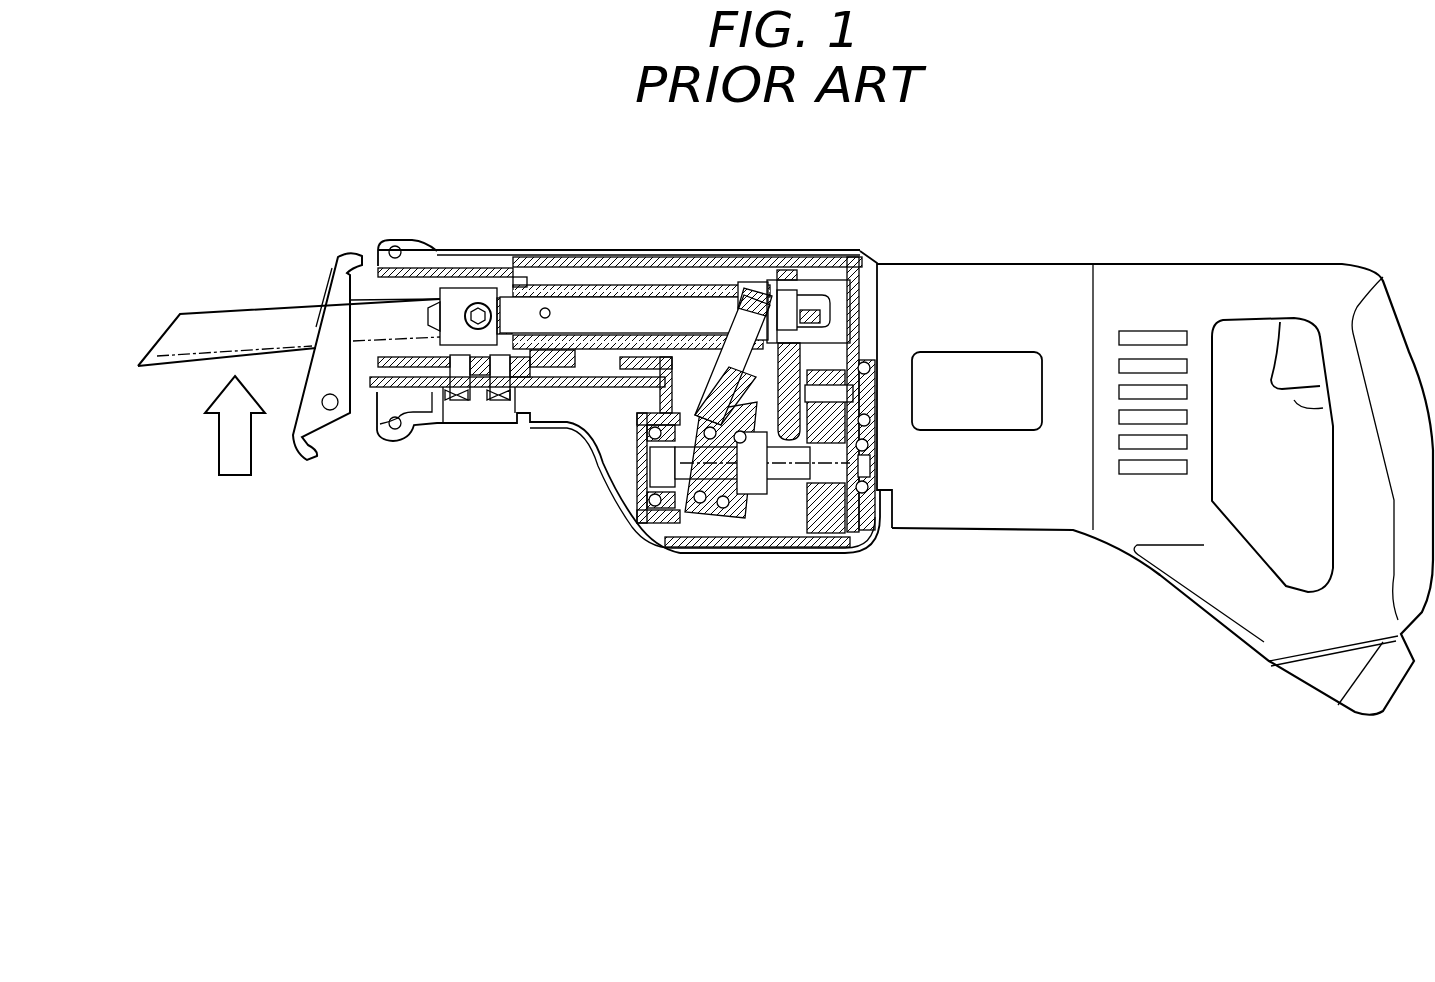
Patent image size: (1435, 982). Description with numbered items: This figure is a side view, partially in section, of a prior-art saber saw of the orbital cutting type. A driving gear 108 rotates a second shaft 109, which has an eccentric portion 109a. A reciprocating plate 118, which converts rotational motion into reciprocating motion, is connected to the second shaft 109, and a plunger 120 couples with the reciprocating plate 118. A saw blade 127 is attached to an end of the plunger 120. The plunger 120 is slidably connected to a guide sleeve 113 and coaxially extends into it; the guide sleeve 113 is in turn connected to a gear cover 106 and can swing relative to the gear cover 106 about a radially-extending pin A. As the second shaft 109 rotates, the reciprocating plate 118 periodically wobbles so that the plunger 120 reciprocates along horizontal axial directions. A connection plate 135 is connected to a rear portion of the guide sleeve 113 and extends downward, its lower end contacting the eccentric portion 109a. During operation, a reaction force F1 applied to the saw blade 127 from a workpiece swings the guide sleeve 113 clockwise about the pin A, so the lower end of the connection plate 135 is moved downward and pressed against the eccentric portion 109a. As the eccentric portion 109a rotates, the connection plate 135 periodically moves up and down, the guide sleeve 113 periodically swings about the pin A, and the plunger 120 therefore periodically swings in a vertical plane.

The saw blade 127 is at (199, 325).
The reaction force F1 is at (235, 443).
The radially-extending pin A is at (547, 290).
The plunger 120 is at (618, 312).
The gear cover 106 is at (655, 263).
The reciprocating plate 118 is at (745, 318).
The guide sleeve 113 is at (822, 275).
The driving gear 108 is at (872, 395).
The second shaft 109 is at (755, 490).
The eccentric portion 109a is at (787, 477).
The connection plate 135 is at (853, 533).